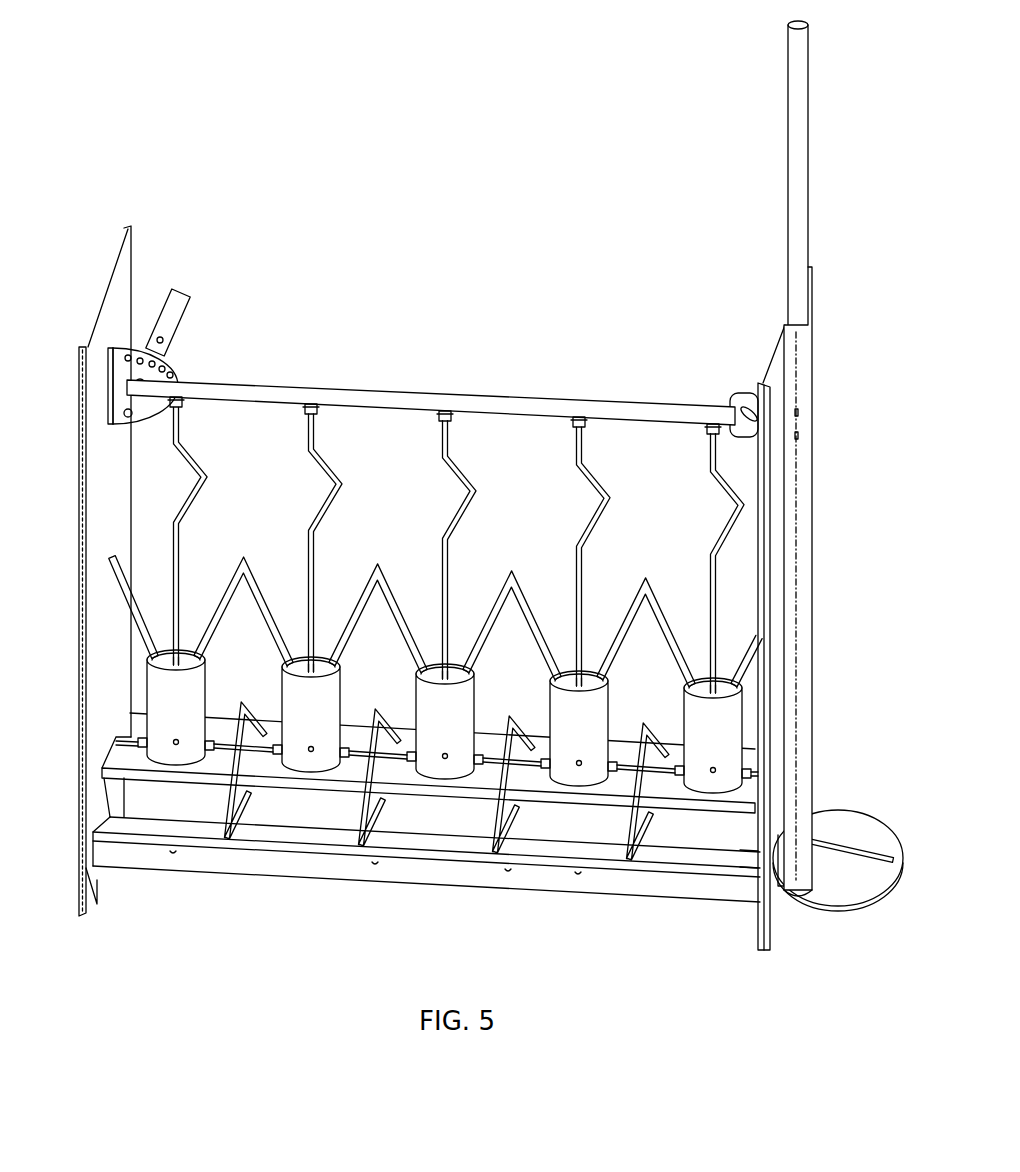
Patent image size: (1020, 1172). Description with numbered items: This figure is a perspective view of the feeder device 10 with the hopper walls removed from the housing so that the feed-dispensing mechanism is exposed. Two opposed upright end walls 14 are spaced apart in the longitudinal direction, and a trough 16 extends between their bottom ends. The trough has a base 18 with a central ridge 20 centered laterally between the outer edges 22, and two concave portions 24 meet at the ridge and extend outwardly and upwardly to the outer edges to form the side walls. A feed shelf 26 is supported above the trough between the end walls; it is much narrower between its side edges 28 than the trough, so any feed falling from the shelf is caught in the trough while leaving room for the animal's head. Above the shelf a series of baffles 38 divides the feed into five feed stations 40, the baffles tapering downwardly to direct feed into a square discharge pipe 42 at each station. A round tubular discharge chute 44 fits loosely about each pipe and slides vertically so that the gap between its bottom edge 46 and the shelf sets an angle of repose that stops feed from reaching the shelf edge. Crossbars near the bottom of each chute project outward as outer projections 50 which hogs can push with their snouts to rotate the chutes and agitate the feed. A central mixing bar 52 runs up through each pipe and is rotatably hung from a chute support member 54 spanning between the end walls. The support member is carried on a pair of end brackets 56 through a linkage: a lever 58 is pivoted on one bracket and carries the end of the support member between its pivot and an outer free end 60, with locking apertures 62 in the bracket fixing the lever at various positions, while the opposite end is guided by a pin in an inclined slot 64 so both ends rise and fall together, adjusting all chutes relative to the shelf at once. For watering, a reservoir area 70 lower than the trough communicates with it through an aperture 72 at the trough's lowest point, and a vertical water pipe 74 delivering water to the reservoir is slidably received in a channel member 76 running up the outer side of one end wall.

The device 10 is at (380, 216).
The end wall 14 is at (122, 290).
The trough 16 is at (261, 906).
The base 18 is at (550, 893).
The central ridge 20 is at (690, 848).
The outer edge 22 is at (433, 862).
The concave portion 24 is at (112, 797).
The feed shelf 26 is at (123, 752).
The side edge 28 is at (190, 783).
The baffle 38 is at (517, 580).
The feed station 40 is at (156, 518).
The discharge pipe 42 is at (452, 665).
The discharge chute 44 is at (470, 712).
The bottom edge 46 is at (595, 778).
The outer projection 50 is at (577, 765).
The central mixing bar 52 is at (474, 480).
The chute support member 54 is at (533, 398).
The end bracket 56 is at (120, 384).
The lever 58 is at (163, 337).
The outer free end 60 is at (183, 296).
The locking aperture 62 is at (132, 347).
The slot 64 is at (745, 407).
The reservoir area 70 is at (840, 820).
The aperture 72 is at (767, 888).
The water pipe 74 is at (806, 176).
The channel member 76 is at (800, 353).